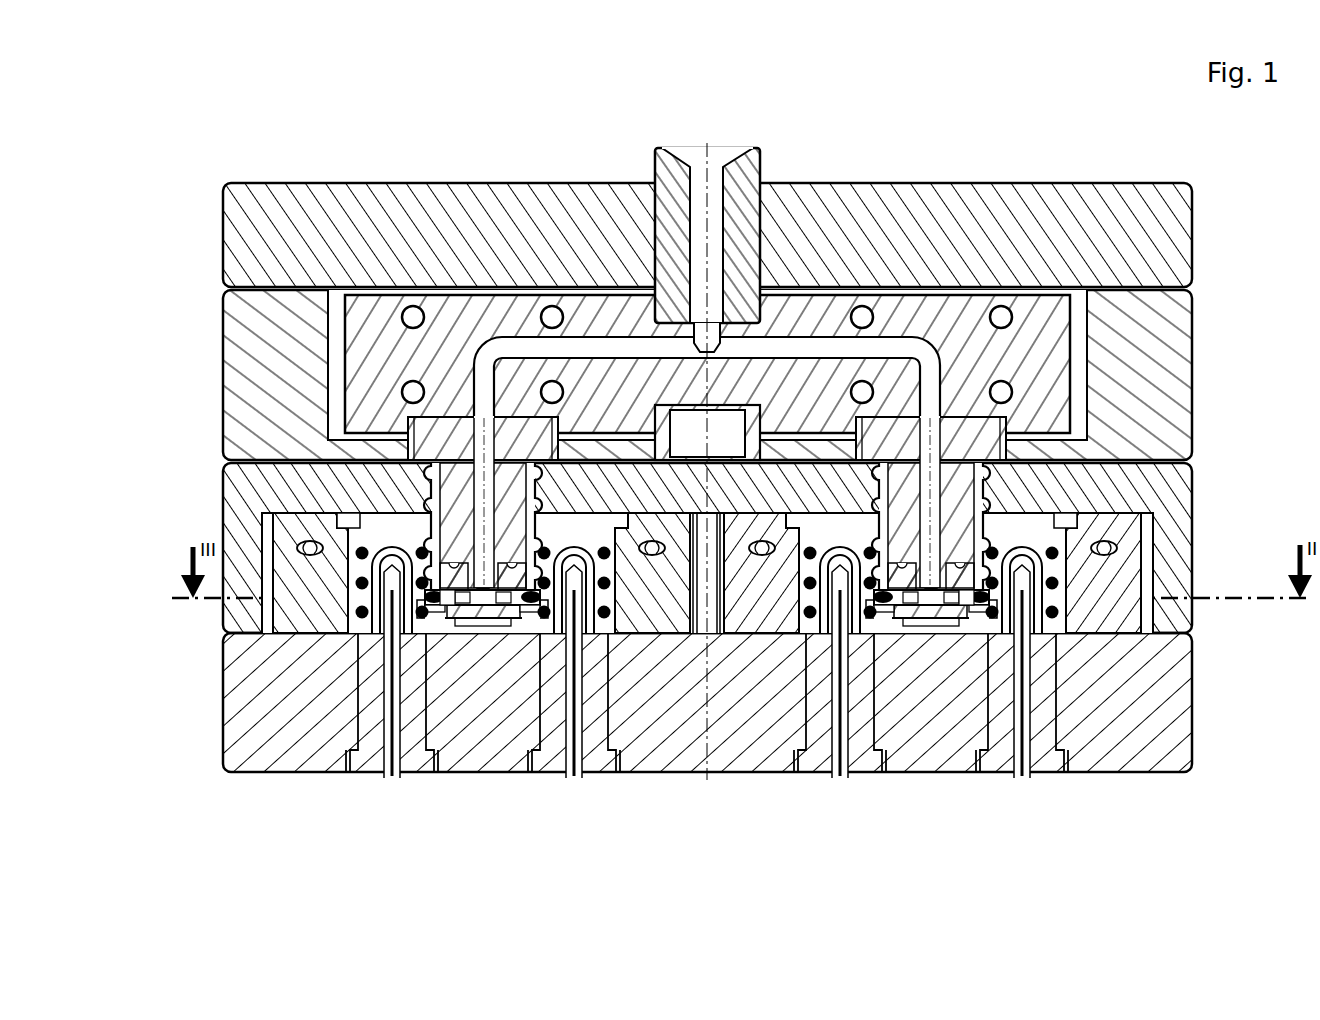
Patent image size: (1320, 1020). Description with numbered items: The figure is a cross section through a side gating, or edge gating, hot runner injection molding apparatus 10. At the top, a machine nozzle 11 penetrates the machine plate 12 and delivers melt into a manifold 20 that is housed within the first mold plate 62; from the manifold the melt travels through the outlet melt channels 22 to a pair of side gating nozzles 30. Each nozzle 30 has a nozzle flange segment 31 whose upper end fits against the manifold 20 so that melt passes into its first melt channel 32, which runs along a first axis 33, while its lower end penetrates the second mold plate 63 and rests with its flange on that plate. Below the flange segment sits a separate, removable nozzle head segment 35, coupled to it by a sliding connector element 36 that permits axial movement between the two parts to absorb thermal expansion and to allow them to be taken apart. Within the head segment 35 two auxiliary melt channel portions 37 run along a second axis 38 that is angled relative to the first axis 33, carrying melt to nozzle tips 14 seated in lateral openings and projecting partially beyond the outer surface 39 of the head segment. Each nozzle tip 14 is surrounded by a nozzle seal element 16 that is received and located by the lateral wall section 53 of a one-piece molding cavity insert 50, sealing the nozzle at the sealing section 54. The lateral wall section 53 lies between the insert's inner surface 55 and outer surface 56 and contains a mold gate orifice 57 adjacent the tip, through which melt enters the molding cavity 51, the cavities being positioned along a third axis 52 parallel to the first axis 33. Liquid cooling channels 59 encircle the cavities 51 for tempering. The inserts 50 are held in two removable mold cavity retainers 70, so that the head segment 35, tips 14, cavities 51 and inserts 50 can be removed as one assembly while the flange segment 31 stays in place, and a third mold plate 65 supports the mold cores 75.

The side gating hot runner injection molding apparatus 10 is at (1121, 162).
The machine nozzle 11 is at (740, 228).
The machine plate 12 is at (993, 235).
The nozzle tip 14 is at (535, 590).
The nozzle seal element 16 is at (862, 617).
The manifold 20 is at (1032, 350).
The outlet melt channel 22 is at (820, 350).
The side gating nozzle 30 is at (1025, 452).
The nozzle flange segment 31 is at (1003, 488).
The first melt channel 32 is at (666, 322).
The first axis 33 is at (481, 398).
The nozzle head segment 35 is at (1003, 620).
The sliding connector element 36 is at (1030, 540).
The auxiliary melt channel portion 37 is at (453, 605).
The second axis 38 is at (490, 628).
The outer surface 39 is at (518, 533).
The molding cavity insert 50 is at (1038, 525).
The molding cavity 51 is at (604, 615).
The third axis 52 is at (1025, 782).
The lateral wall section 53 is at (546, 620).
The sealing section 54 is at (419, 622).
The inner surface 55 is at (565, 632).
The outer surface 56 is at (623, 614).
The mold gate orifice 57 is at (405, 610).
The liquid cooling channel 59 is at (362, 620).
The first mold plate 62 is at (1143, 418).
The second mold plate 63 is at (1178, 600).
The third mold plate 65 is at (1128, 703).
The mold cavity retainer 70 is at (1123, 563).
The mold core 75 is at (1065, 752).